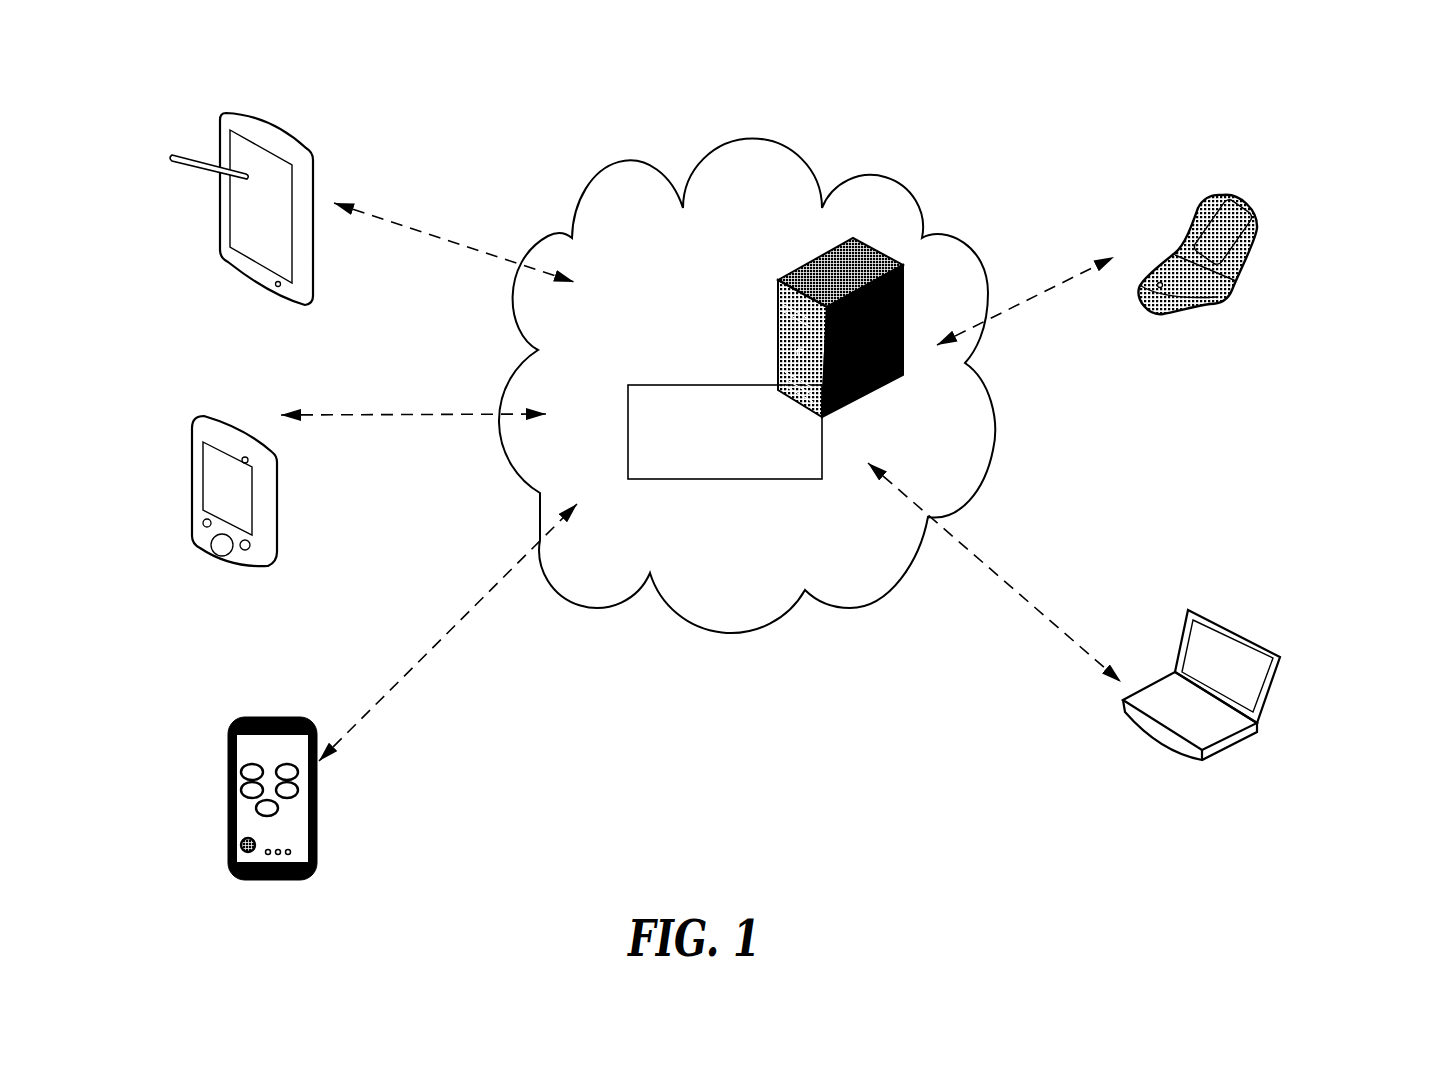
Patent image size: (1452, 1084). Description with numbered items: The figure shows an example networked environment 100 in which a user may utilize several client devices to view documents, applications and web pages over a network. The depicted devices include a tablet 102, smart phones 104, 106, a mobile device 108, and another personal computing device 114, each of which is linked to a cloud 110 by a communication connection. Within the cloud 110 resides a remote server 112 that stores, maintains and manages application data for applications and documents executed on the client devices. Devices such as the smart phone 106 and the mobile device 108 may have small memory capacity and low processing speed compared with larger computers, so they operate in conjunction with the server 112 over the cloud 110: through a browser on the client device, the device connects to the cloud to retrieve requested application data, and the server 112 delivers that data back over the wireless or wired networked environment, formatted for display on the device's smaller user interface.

The system 100 is at (1342, 73).
The tablet 102 is at (227, 105).
The smart phone 104 is at (227, 402).
The smart phone 106 is at (265, 713).
The mobile device 108 is at (1248, 180).
The cloud 110 is at (742, 138).
The remote server 112 is at (733, 367).
The personal computing device 114 is at (1228, 602).